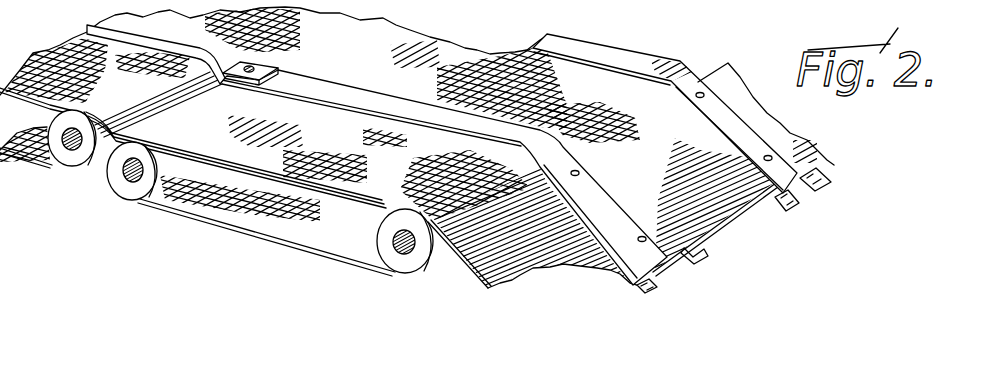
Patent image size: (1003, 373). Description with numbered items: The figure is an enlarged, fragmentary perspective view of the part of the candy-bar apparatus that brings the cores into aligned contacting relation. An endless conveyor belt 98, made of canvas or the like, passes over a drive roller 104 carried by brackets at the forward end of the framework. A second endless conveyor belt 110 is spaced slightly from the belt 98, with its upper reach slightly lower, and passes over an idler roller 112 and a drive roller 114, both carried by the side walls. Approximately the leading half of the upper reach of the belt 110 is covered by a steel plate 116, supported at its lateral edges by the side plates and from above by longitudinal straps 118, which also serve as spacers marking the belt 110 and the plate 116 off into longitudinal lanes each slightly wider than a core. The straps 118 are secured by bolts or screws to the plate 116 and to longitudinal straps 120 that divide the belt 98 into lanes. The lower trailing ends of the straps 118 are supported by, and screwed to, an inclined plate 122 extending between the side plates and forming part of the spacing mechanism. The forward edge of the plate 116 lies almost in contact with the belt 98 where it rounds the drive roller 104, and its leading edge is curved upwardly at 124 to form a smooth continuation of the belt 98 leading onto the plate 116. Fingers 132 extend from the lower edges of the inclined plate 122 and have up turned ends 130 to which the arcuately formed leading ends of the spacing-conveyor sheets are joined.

The endless conveyor belt 98 is at (44, 58).
The drive roller 104 is at (78, 158).
The second endless conveyor belt 110 is at (365, 200).
The idler roller 112 is at (138, 192).
The drive roller 114 is at (410, 266).
The steel plate 116 is at (460, 55).
The longitudinal straps 118 is at (325, 78).
The longitudinal straps 120 is at (87, 29).
The inclined plate 122 is at (737, 84).
The upwardly curved leading edge 124 is at (253, 60).
The up turned ends 130 is at (826, 178).
The fingers 132 is at (810, 175).